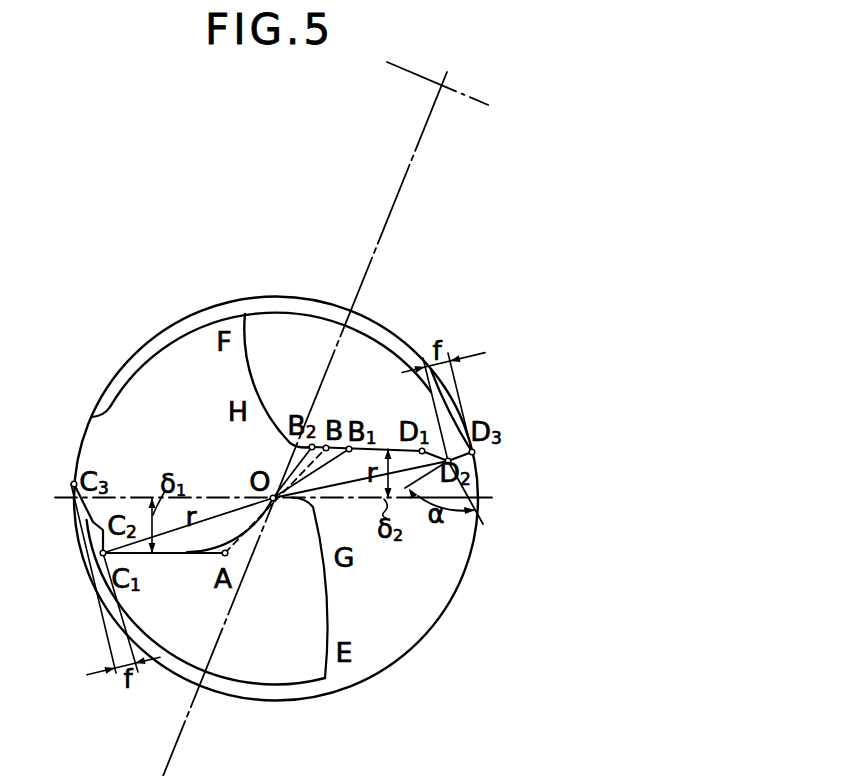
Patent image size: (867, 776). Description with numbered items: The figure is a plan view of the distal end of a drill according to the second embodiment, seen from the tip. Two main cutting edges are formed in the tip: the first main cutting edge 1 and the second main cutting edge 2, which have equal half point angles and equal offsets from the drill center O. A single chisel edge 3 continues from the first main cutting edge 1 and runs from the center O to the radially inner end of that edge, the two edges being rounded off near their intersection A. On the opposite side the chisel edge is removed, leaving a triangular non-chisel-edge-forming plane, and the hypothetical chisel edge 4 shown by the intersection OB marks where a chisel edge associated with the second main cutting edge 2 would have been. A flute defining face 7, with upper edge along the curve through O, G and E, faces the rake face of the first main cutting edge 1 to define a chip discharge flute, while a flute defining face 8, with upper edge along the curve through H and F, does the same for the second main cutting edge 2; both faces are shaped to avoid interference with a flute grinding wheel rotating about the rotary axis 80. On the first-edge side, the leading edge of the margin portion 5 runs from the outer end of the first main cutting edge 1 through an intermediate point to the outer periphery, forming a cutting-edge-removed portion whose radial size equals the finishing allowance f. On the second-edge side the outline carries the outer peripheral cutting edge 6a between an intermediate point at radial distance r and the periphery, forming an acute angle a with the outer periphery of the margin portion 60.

The first main cutting edge 1 is at (160, 554).
The second main cutting edge 2 is at (388, 449).
The chisel edge 3 is at (260, 531).
The hypothetical chisel edge 4 is at (331, 470).
The margin portion 5 is at (82, 447).
The outer peripheral cutting edge 6a is at (463, 426).
The flute defining face 7 is at (327, 601).
The flute defining face 8 is at (250, 358).
The margin portion 60 is at (476, 467).
The rotary axis 80 is at (460, 97).